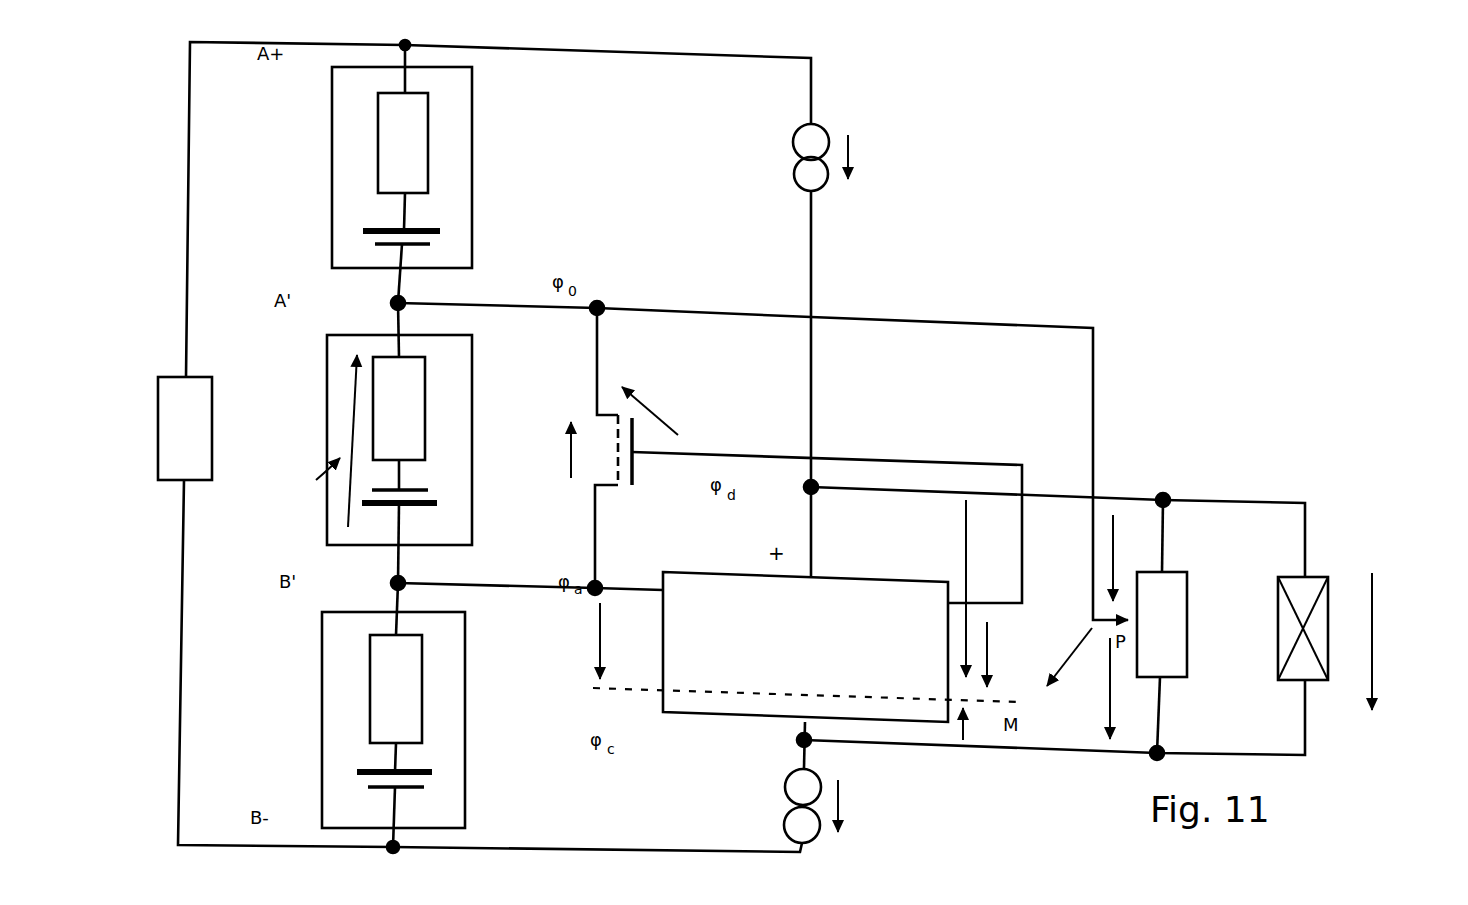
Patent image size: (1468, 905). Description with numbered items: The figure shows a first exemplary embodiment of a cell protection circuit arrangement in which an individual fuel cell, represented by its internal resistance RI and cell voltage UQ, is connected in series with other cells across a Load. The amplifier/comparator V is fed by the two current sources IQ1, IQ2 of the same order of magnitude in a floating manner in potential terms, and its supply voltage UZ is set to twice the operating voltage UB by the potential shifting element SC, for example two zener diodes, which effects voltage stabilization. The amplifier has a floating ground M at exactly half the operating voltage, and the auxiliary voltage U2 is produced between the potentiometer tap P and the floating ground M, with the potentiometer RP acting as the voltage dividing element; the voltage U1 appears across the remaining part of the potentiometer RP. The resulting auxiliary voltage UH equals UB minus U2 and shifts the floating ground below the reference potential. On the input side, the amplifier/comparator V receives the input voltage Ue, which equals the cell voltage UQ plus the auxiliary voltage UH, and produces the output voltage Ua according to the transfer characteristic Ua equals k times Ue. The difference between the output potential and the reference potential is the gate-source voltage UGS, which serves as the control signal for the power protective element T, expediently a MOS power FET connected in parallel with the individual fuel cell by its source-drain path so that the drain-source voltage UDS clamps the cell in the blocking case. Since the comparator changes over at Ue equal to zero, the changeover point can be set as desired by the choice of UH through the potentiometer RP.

The load Load is at (203, 448).
The internal resistance RC cell RI is at (372, 443).
The cell voltage UQ is at (307, 486).
The power protective element T is at (762, 455).
The gate-source voltage UGS is at (662, 411).
The drain-source voltage UDS is at (538, 452).
The current source IQ1 is at (838, 157).
The current source IQ2 is at (828, 806).
The amplifier/comparator V is at (805, 647).
The potentiometer RP is at (1183, 626).
The potential shifting element SC is at (1325, 605).
The supply voltage UZ is at (1384, 678).
The input voltage Ue is at (574, 641).
The operating voltage UB is at (951, 648).
The output voltage Ua is at (1006, 654).
The auxiliary voltage UH is at (1069, 657).
The auxiliary voltage U2 is at (1130, 558).
The voltage U1 is at (1126, 688).